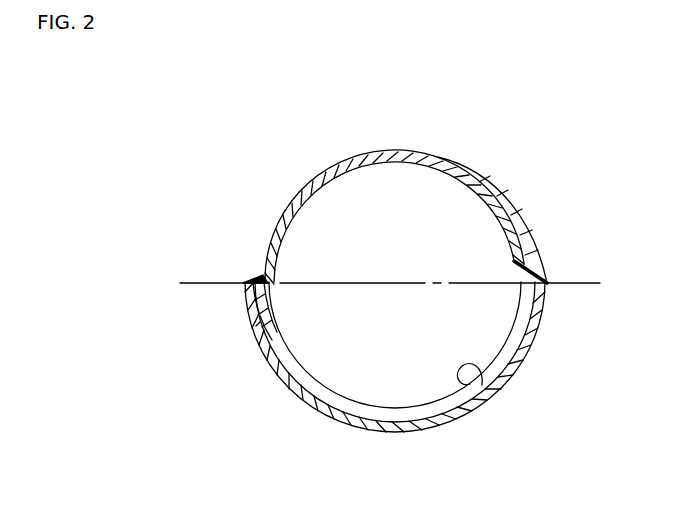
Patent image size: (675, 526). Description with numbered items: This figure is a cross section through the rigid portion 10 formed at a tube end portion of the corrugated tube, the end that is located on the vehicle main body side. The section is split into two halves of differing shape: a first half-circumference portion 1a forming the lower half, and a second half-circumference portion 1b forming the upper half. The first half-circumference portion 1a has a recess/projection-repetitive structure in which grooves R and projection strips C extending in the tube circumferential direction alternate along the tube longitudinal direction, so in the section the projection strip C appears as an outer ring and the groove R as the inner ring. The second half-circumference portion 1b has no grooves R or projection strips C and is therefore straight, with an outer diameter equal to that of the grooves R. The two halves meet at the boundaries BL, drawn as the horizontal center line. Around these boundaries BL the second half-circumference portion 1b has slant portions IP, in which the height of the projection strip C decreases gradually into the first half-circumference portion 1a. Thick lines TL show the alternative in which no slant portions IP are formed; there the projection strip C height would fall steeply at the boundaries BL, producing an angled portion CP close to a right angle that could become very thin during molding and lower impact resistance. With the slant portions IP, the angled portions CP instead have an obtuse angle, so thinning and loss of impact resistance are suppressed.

The rigid portion 10 is at (422, 285).
The first half-circumference portion 1a is at (310, 418).
The second half-circumference portion 1b is at (303, 165).
The slant portion IP is at (260, 281).
The boundary BL is at (196, 283).
The angled portion CP is at (246, 284).
The thick line TL is at (257, 326).
The projection strip C is at (398, 425).
The groove R is at (482, 385).